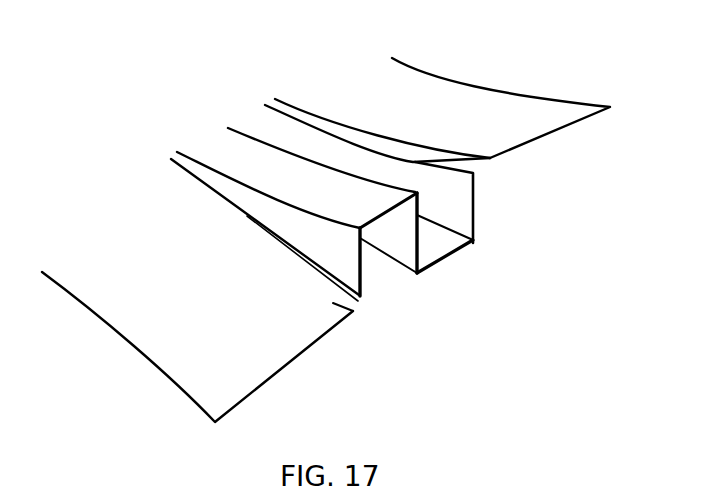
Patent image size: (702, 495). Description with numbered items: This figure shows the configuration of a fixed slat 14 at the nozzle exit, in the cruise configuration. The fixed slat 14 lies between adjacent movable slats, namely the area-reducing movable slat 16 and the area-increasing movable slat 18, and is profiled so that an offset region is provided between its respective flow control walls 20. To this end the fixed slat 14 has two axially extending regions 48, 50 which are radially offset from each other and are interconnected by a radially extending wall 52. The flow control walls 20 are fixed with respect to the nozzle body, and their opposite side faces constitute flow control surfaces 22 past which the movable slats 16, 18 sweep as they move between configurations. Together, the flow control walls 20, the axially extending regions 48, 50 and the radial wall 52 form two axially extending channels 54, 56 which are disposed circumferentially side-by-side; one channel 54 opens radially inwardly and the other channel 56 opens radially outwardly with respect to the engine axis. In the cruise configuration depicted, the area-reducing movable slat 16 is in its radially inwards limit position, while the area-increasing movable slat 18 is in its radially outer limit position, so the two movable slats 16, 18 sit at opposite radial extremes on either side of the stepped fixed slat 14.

The fixed slat 14 is at (446, 219).
The area-reducing movable slat 16 is at (272, 376).
The area-increasing movable slat 18 is at (558, 127).
The flow control wall 20 is at (475, 205).
The flow control surface 22 is at (307, 237).
The axially extending region 48 is at (300, 185).
The axially extending region 50 is at (460, 250).
The radially extending wall 52 is at (411, 245).
The axially extending channel 54 is at (402, 227).
The axially extending channel 56 is at (463, 215).